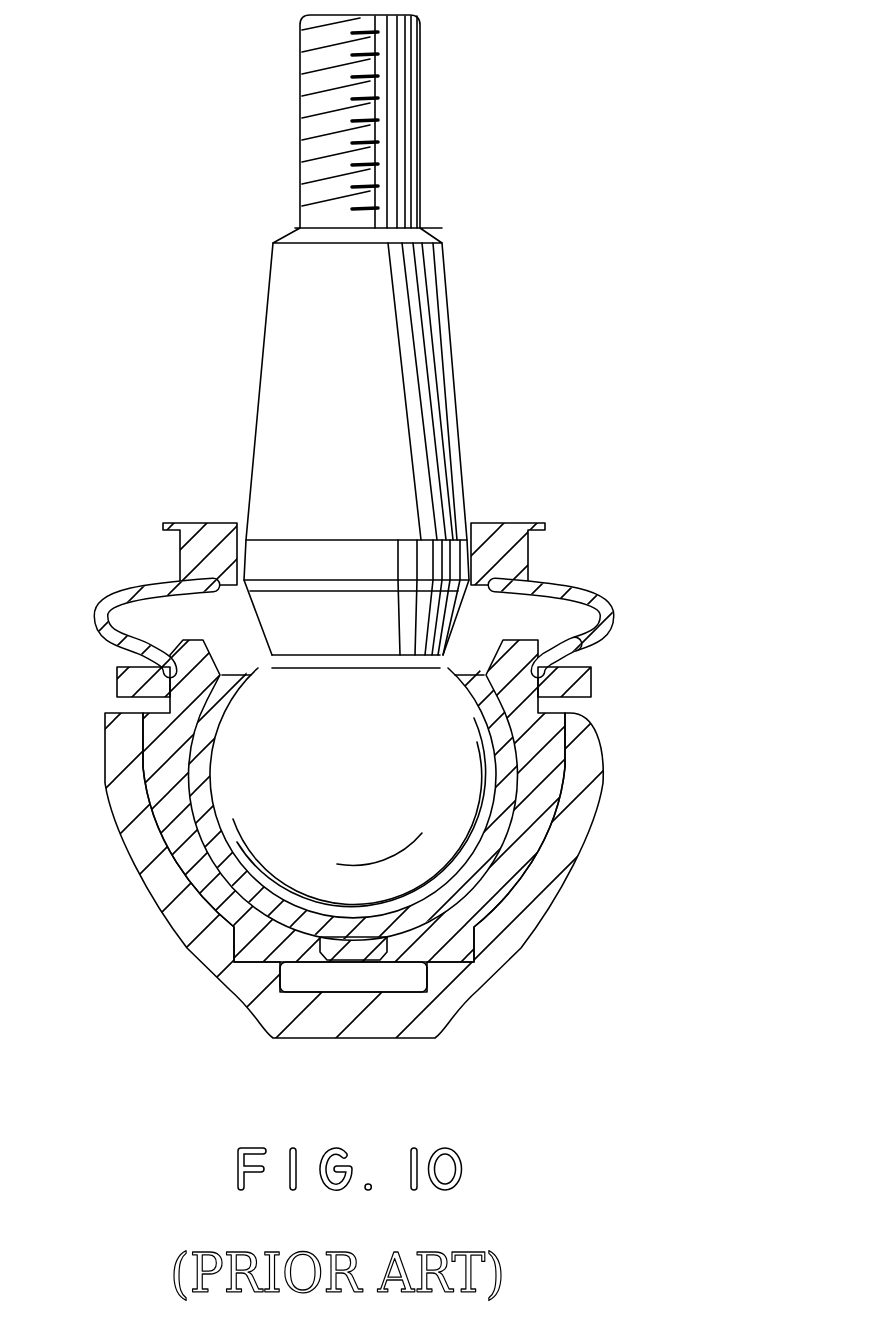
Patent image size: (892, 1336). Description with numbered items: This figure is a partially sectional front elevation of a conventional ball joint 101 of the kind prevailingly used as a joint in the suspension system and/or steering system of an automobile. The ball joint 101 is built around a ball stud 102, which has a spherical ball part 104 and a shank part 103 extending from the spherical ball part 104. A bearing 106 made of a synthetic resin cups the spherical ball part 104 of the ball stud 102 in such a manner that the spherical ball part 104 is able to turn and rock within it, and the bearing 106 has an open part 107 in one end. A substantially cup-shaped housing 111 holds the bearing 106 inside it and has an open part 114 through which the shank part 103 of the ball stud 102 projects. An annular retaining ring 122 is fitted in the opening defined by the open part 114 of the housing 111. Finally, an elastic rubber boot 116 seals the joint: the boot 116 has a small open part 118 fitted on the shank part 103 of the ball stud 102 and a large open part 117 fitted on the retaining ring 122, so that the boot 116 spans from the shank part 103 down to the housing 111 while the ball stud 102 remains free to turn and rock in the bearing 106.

The ball joint 101 is at (478, 123).
The ball stud 102 is at (458, 284).
The shank part 103 is at (460, 388).
The spherical ball part 104 is at (230, 863).
The bearing 106 is at (483, 883).
The open part 107 is at (467, 665).
The housing 111 is at (598, 822).
The open part 114 is at (228, 715).
The elastic rubber boot 116 is at (583, 580).
The large open part 117 is at (590, 690).
The small open part 118 is at (545, 540).
The annular retaining ring 122 is at (587, 655).